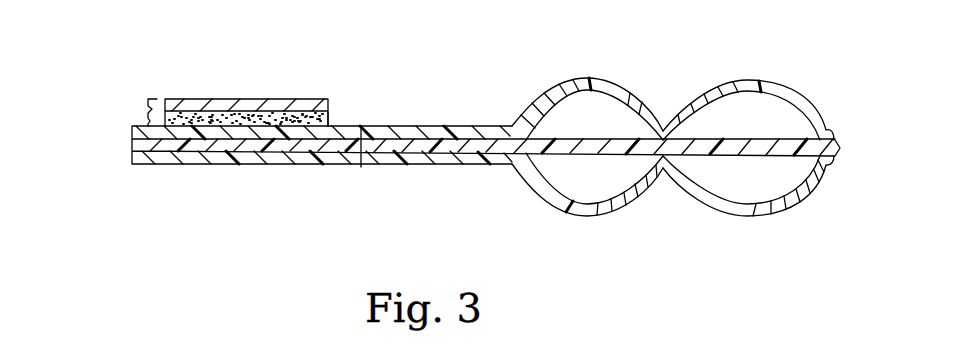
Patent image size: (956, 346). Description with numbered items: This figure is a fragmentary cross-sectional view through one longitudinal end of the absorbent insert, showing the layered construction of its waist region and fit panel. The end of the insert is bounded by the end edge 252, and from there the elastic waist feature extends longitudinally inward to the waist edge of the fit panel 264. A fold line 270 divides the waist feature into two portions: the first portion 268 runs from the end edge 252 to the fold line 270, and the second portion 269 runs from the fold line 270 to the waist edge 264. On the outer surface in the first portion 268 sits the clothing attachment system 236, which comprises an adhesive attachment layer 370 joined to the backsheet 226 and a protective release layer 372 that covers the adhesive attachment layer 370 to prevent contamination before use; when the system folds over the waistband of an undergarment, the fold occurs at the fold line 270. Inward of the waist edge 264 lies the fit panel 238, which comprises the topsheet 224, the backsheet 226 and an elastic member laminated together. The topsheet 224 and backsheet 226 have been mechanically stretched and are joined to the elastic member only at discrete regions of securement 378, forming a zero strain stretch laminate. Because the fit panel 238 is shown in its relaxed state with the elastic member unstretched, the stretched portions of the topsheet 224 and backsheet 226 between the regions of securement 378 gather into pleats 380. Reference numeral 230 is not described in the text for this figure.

The topsheet 224 is at (612, 208).
The backsheet 226 is at (588, 78).
The inner tubular member 230 is at (331, 147).
The clothing attachment system 236 is at (143, 114).
The fit panel 238 is at (775, 120).
The end edge 252 is at (131, 145).
The waist edge of the fit panel 264 is at (518, 127).
The first portion 268 is at (225, 157).
The second portion 269 is at (407, 165).
The fold line 270 is at (368, 147).
The adhesive attachment layer 370 is at (328, 120).
The protective release layer 372 is at (228, 105).
The regions of securement 378 is at (668, 130).
The pleats 380 is at (747, 217).